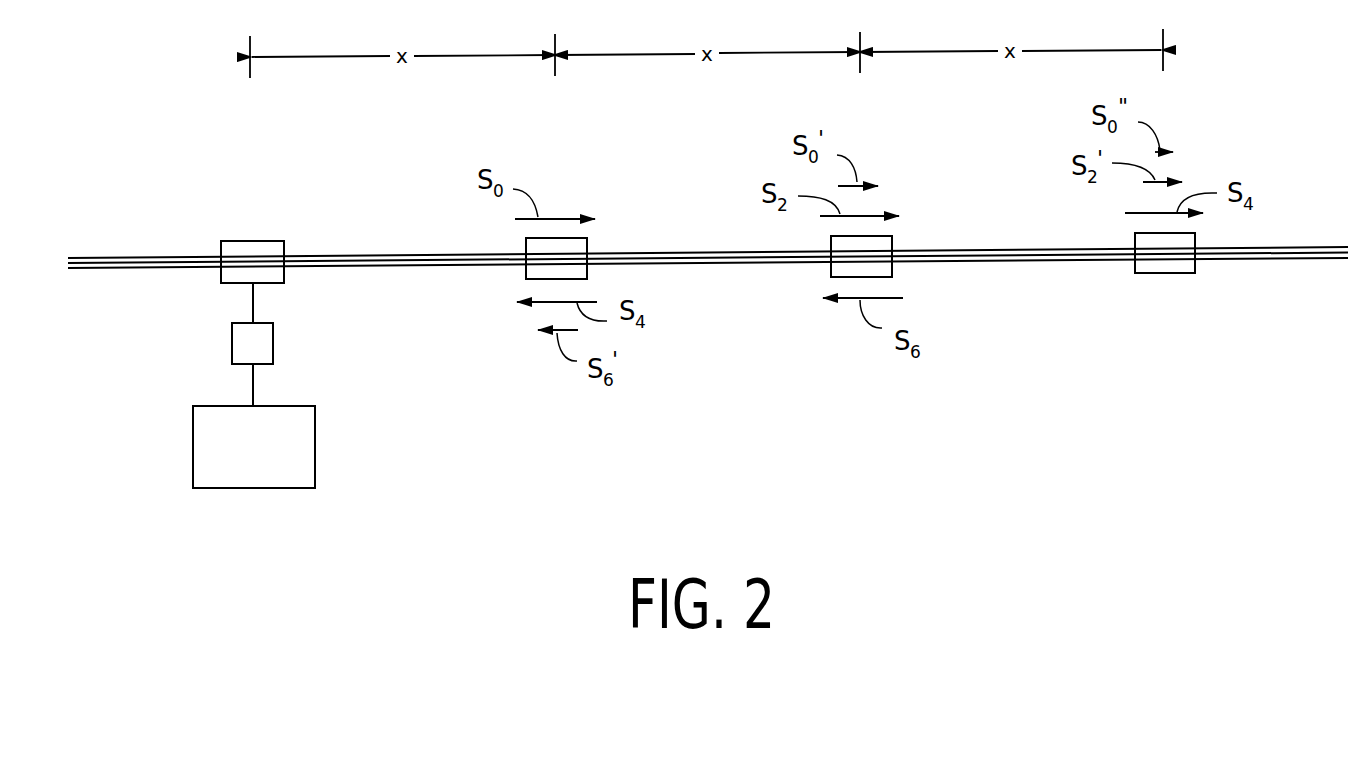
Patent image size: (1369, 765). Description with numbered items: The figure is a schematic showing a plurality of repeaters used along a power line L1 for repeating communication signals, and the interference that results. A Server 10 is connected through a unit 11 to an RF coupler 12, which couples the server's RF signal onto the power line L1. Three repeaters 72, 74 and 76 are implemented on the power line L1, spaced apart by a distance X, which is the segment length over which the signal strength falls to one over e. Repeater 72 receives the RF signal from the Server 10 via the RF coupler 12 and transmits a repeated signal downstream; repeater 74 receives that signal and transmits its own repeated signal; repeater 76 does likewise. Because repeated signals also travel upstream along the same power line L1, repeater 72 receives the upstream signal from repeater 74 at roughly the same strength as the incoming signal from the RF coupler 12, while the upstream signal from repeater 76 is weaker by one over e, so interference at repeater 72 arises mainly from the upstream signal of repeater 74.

The Server 10 is at (193, 442).
The interface unit 11 is at (232, 342).
The RF coupler 12 is at (252, 241).
The repeater 72 is at (588, 250).
The repeater 74 is at (893, 247).
The repeater 76 is at (1165, 273).
The power line L1 is at (130, 253).